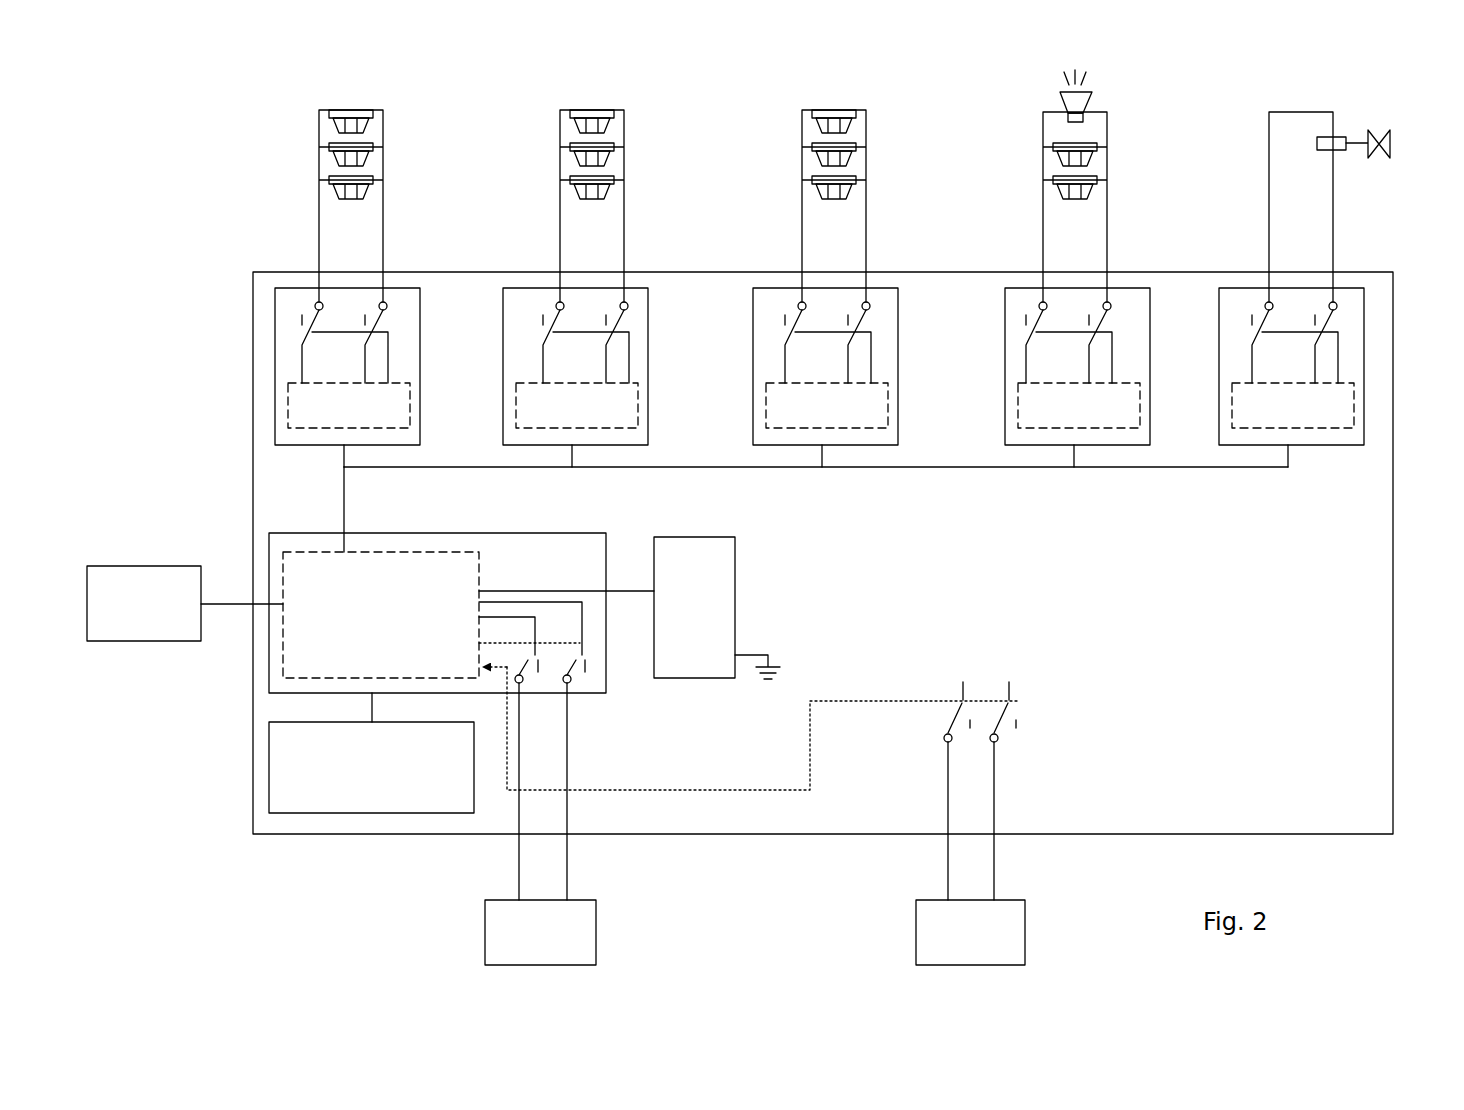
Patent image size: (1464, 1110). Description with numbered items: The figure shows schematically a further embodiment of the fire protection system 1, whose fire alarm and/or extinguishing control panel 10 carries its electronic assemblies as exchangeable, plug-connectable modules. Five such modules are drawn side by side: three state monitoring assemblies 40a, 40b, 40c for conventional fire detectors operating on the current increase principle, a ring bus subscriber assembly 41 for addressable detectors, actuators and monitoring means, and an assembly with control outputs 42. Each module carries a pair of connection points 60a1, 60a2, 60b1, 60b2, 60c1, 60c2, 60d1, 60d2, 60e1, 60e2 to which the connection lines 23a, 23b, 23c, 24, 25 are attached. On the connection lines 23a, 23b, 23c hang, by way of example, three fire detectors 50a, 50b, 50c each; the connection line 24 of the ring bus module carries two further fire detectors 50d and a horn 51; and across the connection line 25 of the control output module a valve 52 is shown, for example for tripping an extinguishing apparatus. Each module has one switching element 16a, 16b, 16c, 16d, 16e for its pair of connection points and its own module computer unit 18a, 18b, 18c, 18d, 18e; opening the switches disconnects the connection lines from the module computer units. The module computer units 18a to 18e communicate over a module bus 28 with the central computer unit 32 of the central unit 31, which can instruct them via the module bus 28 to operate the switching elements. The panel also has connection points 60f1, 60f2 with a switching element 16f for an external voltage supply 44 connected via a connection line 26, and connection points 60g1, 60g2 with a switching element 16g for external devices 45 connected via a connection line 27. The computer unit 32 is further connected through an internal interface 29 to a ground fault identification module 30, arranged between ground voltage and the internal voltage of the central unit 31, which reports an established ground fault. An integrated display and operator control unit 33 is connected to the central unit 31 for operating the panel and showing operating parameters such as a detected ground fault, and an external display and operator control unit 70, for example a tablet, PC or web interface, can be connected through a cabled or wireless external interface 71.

The fire protection system 1 is at (206, 160).
The fire alarm and/or extinguishing control panel 10 is at (242, 271).
The switching element 16a is at (398, 324).
The switching element 16b is at (626, 324).
The switching element 16c is at (876, 324).
The switching element 16d is at (1128, 324).
The switching element 16e is at (1343, 323).
The switching element 16f is at (550, 638).
The switching element 16g is at (1022, 702).
The module computer unit 18a is at (384, 430).
The module computer unit 18b is at (575, 430).
The module computer unit 18c is at (845, 430).
The module computer unit 18d is at (1097, 430).
The module computer unit 18e is at (1307, 430).
The connection line 23a is at (376, 228).
The connection line 23b is at (617, 228).
The connection line 23c is at (859, 228).
The connection line 24 is at (1100, 226).
The connection line 25 is at (1328, 188).
The connection line 26 is at (952, 887).
The connection line 27 is at (524, 886).
The module bus 28 is at (935, 470).
The internal interface 29 is at (630, 587).
The ground fault identification module 30 is at (735, 592).
The central unit 31 is at (457, 533).
The central computer unit 32 is at (318, 549).
The display and operator control unit 33 is at (269, 762).
The state monitoring assembly 40a is at (398, 284).
The state monitoring assembly 40b is at (639, 284).
The state monitoring assembly 40c is at (881, 284).
The ring bus subscriber assembly 41 is at (1122, 286).
The assembly with control outputs 42 is at (1347, 286).
The external voltage supply 44 is at (1029, 934).
The external devices 45 is at (601, 932).
The fire detectors 50a is at (386, 174).
The fire detectors 50b is at (627, 174).
The fire detectors 50c is at (869, 174).
The fire detectors 50d is at (1096, 139).
The horn 51 is at (1095, 103).
The valve 52 is at (1342, 126).
The connection point 60a1 is at (316, 300).
The connection point 60a2 is at (380, 300).
The connection point 60b1 is at (557, 300).
The connection point 60b2 is at (621, 300).
The connection point 60c1 is at (799, 300).
The connection point 60c2 is at (863, 300).
The connection point 60d1 is at (1040, 300).
The connection point 60d2 is at (1104, 300).
The connection point 60e1 is at (1266, 300).
The connection point 60e2 is at (1330, 300).
The connection point 60f1 is at (955, 745).
The connection point 60f2 is at (1000, 742).
The connection point 60g1 is at (530, 684).
The connection point 60g2 is at (576, 680).
The external display and operator control unit 70 is at (146, 566).
The external interface 71 is at (226, 604).